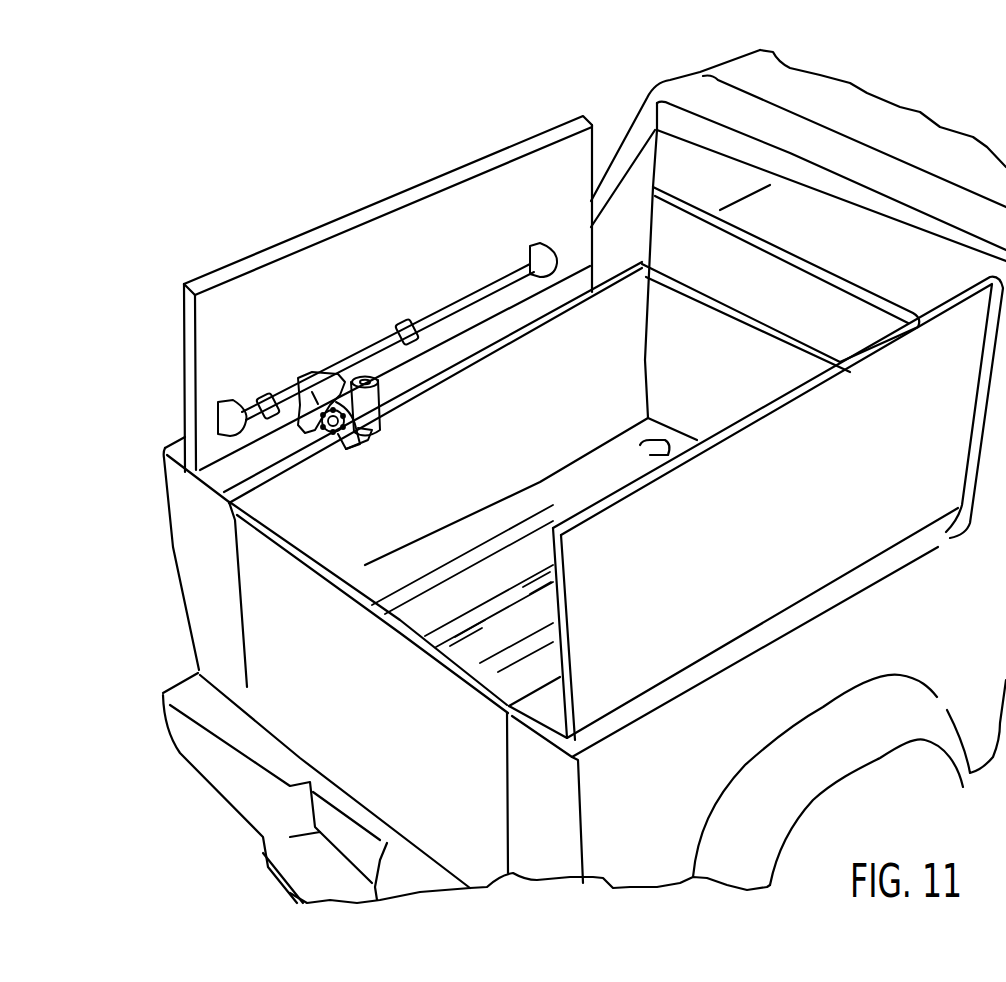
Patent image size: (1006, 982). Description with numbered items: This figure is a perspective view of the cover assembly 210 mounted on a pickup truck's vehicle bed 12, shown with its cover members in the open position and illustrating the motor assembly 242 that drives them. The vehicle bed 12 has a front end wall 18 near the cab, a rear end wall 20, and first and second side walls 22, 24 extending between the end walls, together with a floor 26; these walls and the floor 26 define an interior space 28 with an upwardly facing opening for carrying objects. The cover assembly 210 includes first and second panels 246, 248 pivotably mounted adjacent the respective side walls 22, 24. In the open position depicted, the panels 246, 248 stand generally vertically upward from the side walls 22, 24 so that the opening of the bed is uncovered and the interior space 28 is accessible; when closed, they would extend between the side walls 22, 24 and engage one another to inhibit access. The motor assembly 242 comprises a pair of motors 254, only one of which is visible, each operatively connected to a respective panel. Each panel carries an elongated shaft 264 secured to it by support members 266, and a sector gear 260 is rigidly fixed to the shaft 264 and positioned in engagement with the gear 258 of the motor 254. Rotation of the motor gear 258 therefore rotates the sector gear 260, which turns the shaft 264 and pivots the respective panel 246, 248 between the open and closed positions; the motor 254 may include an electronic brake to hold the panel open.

The vehicle bed 12 is at (405, 578).
The front end wall 18 is at (838, 333).
The rear end wall 20 is at (397, 737).
The first side wall 22 is at (172, 443).
The second side wall 24 is at (787, 717).
The floor 26 is at (520, 626).
The interior space 28 is at (327, 535).
The cover assembly 210 is at (251, 248).
The motor assembly 242 is at (367, 447).
The first panel 246 is at (417, 267).
The second panel 248 is at (693, 591).
The motor 254 is at (367, 421).
The gear 258 is at (337, 437).
The sector gear 260 is at (308, 404).
The elongated shaft 264 is at (355, 363).
The support members 266 is at (537, 250).